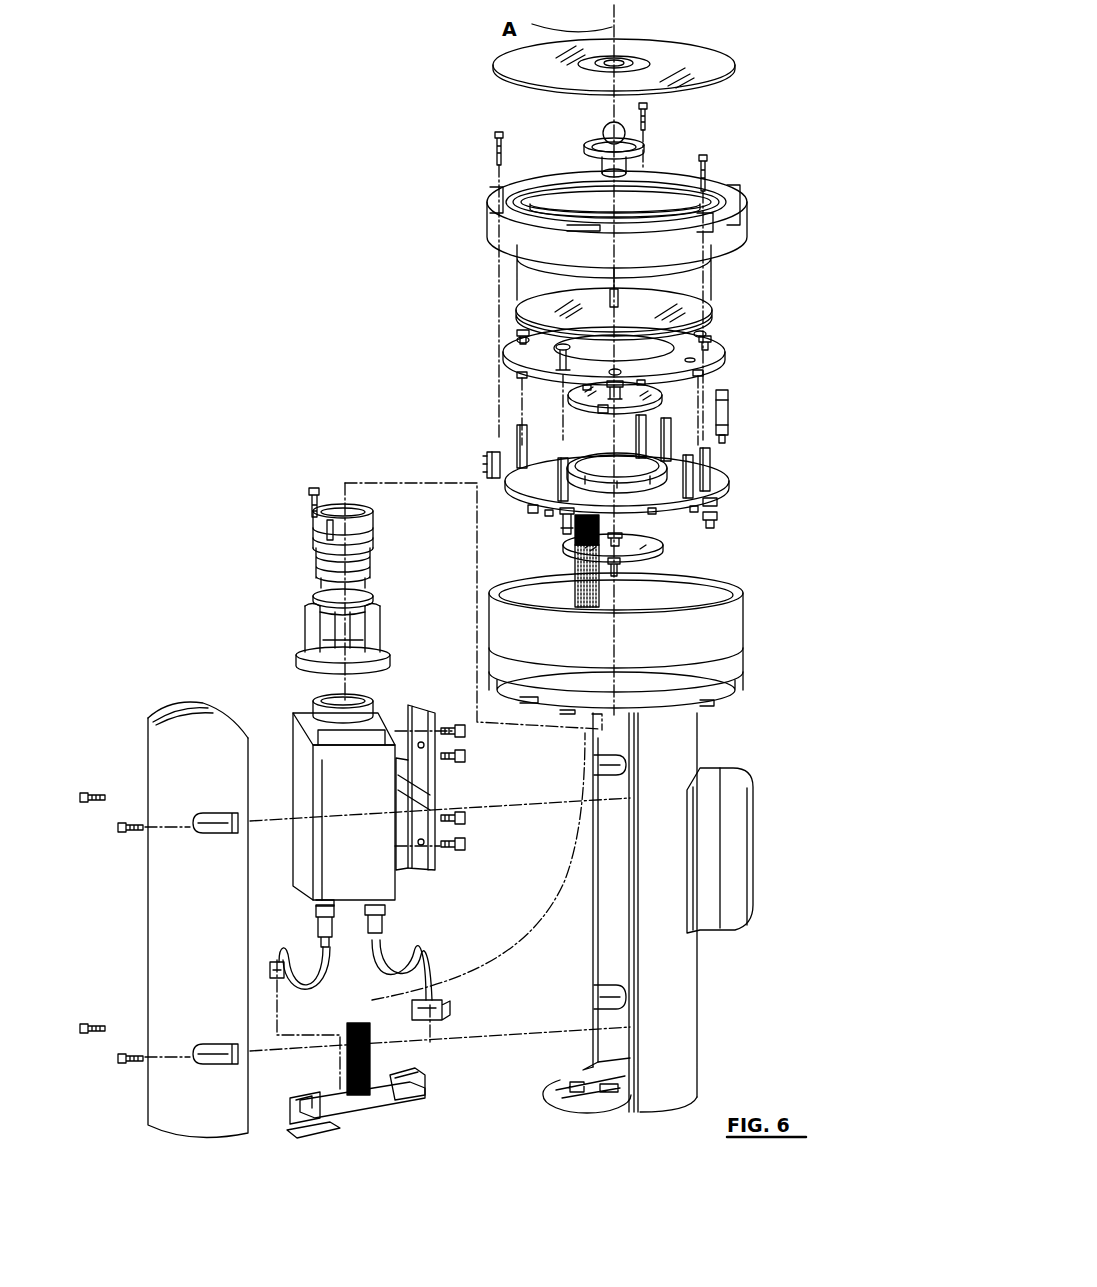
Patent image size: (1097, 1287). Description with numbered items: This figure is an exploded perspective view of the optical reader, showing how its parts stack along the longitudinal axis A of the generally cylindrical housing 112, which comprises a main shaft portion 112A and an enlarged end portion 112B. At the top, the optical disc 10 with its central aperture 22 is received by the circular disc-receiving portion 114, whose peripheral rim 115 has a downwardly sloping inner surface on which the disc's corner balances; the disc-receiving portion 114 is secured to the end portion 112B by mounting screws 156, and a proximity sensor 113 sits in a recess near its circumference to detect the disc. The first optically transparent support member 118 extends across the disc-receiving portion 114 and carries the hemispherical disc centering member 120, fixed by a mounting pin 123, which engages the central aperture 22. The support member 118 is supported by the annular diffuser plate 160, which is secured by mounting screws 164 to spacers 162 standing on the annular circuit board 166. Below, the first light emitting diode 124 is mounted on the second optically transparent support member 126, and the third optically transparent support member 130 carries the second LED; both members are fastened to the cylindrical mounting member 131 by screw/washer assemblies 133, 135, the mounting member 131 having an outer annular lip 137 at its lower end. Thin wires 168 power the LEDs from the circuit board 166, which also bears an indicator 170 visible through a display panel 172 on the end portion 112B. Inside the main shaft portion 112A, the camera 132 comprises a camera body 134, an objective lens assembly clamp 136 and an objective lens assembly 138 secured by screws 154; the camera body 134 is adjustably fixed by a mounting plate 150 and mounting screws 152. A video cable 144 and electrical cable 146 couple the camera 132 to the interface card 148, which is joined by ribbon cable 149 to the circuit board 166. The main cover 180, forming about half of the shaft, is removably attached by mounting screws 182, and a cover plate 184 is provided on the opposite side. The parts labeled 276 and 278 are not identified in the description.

The optical disc 10 is at (740, 62).
The central aperture 22 is at (624, 60).
The housing 112 is at (650, 843).
The main shaft portion 112A is at (677, 733).
The enlarged end portion 112B is at (725, 645).
The proximity sensor 113 is at (730, 415).
The disc-receiving portion 114 is at (644, 195).
The peripheral rim 115 is at (560, 182).
The first optically transparent support member 118 is at (683, 308).
The disc centering member 120 is at (608, 125).
The mounting pin 123 is at (632, 288).
The first light emitting diode 124 is at (566, 392).
The second optically transparent support member 126 is at (596, 392).
The third optically transparent support member 130 is at (690, 500).
The cylindrical mounting member 131 is at (658, 480).
The camera 132 is at (256, 617).
The screw/washer assembly 133 is at (660, 390).
The camera body 134 is at (298, 755).
The screw/washer assembly 135 is at (640, 540).
The objective lens assembly clamp 136 is at (380, 620).
The outer annular lip 137 is at (582, 547).
The objective lens assembly 138 is at (370, 534).
The video cable 144 is at (416, 945).
The electrical cable 146 is at (295, 945).
The interface card 148 is at (376, 1112).
The ribbon cable 149 is at (372, 1028).
The mounting plate 150 is at (420, 704).
The mounting screws 152 is at (465, 757).
The screws 154 is at (327, 522).
The mounting screws 156 is at (650, 125).
The annular diffuser plate 160 is at (700, 352).
The spacers 162 is at (518, 447).
The mounting screws 164 is at (520, 332).
The circuit board 166 is at (560, 512).
The thin wires 168 is at (622, 578).
The indicator 170 is at (494, 463).
The display panel 172 is at (482, 637).
The main cover 180 is at (163, 945).
The mounting screws 182 is at (118, 830).
The cover plate 184 is at (753, 857).
The nut 276 is at (718, 516).
The washer 278 is at (718, 502).